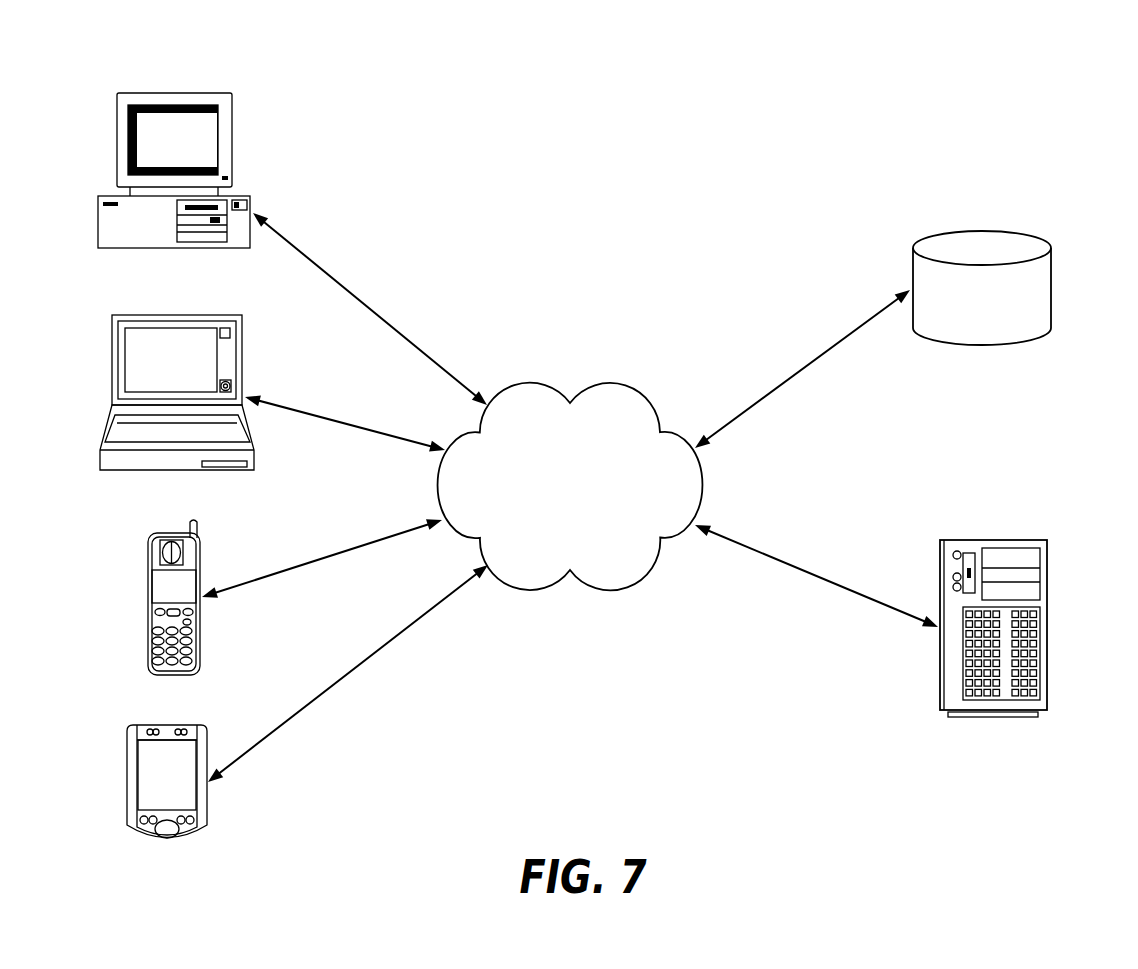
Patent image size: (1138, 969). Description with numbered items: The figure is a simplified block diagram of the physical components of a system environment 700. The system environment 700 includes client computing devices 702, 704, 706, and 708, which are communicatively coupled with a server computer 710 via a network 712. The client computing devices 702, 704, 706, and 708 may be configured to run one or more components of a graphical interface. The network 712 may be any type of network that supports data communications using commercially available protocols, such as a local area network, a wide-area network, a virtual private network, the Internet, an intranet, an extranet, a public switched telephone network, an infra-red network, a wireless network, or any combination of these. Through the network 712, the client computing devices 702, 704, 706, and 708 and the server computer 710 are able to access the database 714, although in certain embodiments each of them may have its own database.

The system environment 700 is at (1096, 138).
The client computing device 702 is at (177, 93).
The client computing device 704 is at (178, 315).
The client computing device 706 is at (172, 536).
The client computing device 708 is at (172, 726).
The server computer 710 is at (992, 540).
The network 712 is at (570, 487).
The database 714 is at (1025, 232).